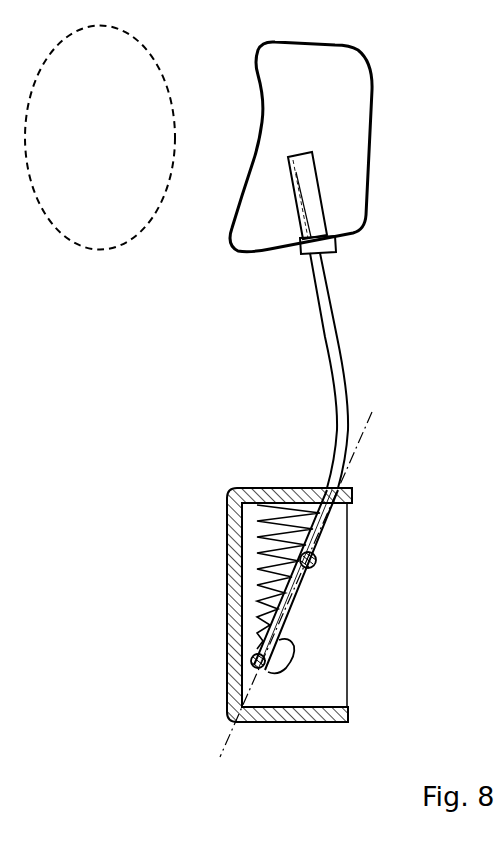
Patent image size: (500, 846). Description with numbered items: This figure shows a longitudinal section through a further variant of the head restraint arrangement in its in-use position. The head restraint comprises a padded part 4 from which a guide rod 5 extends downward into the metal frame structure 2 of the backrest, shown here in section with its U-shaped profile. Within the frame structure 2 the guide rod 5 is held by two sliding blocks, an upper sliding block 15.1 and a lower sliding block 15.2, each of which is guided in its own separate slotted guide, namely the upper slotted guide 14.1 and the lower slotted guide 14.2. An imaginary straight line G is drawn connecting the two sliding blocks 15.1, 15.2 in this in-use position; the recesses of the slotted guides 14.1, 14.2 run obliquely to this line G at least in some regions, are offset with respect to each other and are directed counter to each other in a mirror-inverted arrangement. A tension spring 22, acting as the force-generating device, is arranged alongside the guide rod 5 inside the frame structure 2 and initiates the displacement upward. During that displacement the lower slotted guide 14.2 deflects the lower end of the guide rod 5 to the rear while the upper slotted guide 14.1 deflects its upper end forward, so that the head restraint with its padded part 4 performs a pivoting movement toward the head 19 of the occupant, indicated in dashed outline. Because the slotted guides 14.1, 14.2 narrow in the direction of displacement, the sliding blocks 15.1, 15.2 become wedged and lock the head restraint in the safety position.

The head 19 is at (112, 156).
The padded part 4 is at (318, 128).
The guide rod 5 is at (342, 375).
The imaginary straight line G is at (357, 450).
The frame structure 2 is at (285, 722).
The tension spring 22 is at (295, 597).
The upper slotted guide 14.1 is at (320, 512).
The upper sliding block 15.1 is at (315, 558).
The lower slotted guide 14.2 is at (293, 644).
The lower sliding block 15.2 is at (273, 677).